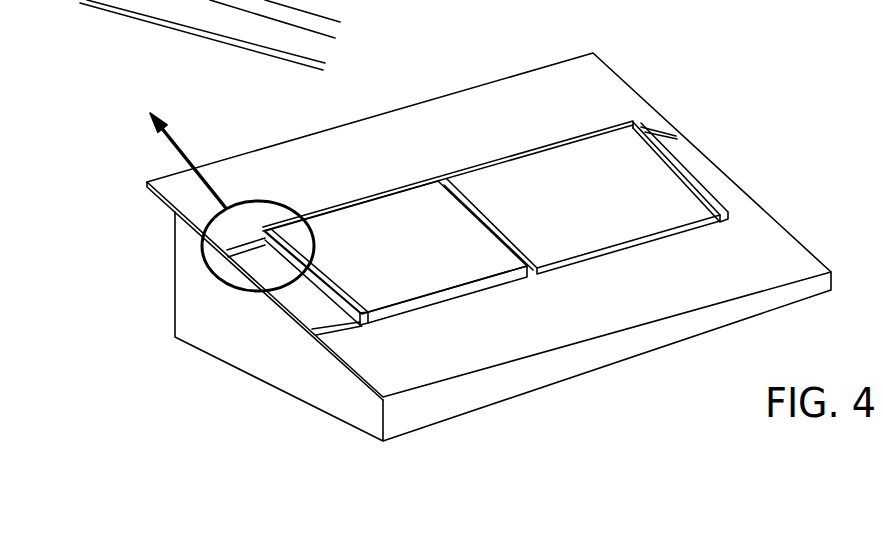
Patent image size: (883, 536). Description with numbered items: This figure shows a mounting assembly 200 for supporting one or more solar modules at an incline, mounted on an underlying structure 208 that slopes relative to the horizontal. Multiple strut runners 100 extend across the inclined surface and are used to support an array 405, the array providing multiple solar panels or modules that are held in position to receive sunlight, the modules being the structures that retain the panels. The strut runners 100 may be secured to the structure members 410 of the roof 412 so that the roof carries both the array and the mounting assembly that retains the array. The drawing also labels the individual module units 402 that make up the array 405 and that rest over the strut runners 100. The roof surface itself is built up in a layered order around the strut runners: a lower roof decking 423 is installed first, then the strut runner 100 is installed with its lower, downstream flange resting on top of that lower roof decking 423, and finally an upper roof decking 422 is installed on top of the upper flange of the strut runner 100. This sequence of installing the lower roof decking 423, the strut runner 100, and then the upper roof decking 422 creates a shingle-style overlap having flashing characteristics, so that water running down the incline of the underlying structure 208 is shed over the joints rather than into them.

The strut runner 100 is at (433, 299).
The assembly 200 is at (328, 182).
The underlying structure 208 is at (303, 305).
The pad 402 is at (425, 262).
The array 405 is at (474, 144).
The structure members 410 is at (347, 327).
The roof 412 is at (552, 337).
The upper roof decking 422 is at (528, 105).
The lower roof decking 423 is at (697, 272).